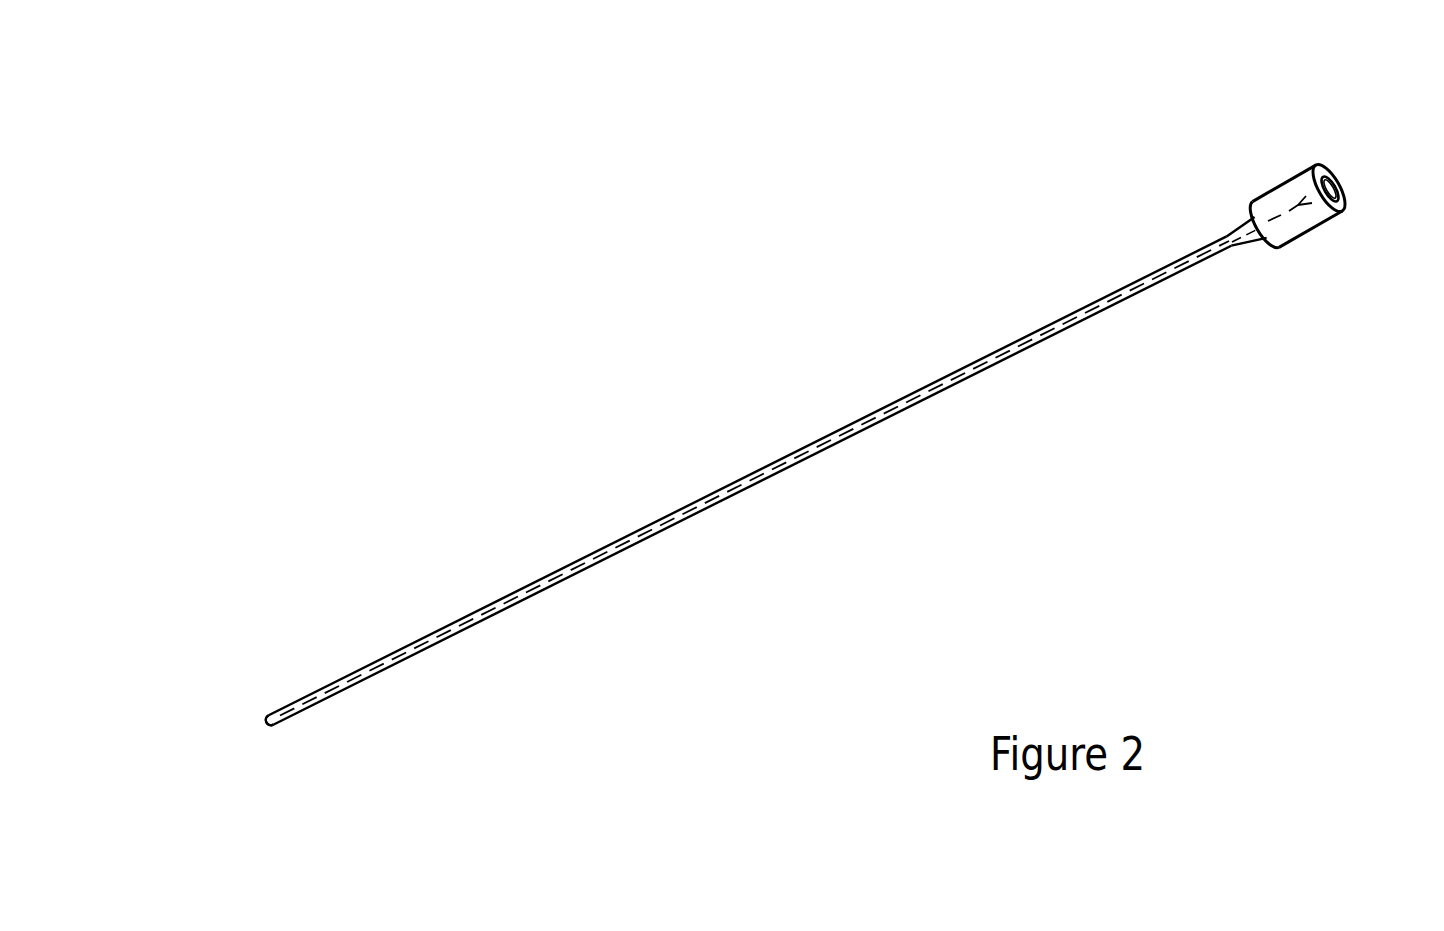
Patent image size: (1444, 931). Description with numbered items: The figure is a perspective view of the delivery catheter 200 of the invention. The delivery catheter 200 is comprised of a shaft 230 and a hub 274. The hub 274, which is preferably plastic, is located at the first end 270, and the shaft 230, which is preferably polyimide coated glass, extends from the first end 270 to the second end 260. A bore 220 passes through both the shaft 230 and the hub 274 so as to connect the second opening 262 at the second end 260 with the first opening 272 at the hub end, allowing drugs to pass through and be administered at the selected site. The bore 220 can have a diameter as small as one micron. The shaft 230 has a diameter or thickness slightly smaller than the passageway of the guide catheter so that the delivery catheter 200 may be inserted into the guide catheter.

The delivery catheter 200 is at (893, 450).
The bore 220 is at (670, 527).
The shaft 230 is at (968, 363).
The second end 260 is at (270, 728).
The second opening 262 is at (265, 723).
The first end 270 is at (1343, 212).
The first opening 272 is at (1342, 188).
The hub 274 is at (1272, 188).